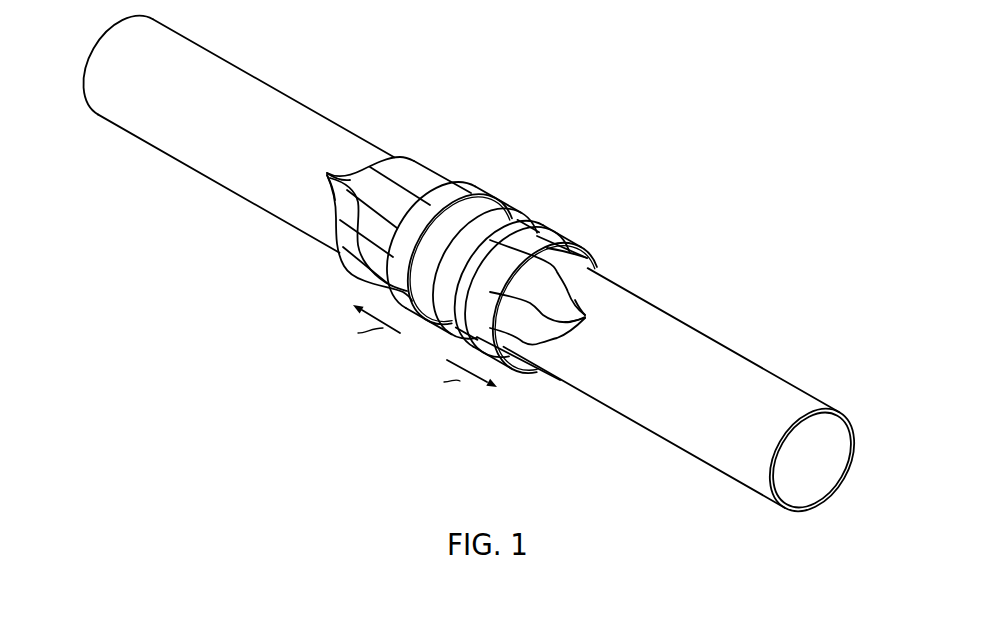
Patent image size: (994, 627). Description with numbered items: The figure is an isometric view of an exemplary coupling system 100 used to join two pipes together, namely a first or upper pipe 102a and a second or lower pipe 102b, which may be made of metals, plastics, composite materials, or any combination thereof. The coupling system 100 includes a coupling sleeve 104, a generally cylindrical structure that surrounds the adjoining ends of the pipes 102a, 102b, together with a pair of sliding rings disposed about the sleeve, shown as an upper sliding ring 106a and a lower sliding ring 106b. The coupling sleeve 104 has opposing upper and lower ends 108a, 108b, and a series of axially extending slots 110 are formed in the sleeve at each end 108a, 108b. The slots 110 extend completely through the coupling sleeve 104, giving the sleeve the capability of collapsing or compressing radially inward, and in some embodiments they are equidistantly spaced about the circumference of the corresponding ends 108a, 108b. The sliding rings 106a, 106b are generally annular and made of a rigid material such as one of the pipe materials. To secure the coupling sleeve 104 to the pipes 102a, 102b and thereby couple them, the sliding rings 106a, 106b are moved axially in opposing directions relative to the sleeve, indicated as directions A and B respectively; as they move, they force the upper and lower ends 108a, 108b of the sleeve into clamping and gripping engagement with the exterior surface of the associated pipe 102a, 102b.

The coupling system 100 is at (613, 113).
The first or upper pipe 102a is at (274, 92).
The second or lower pipe 102b is at (723, 348).
The coupling sleeve 104 is at (487, 209).
The upper sliding ring 106a is at (497, 207).
The lower sliding ring 106b is at (516, 224).
The upper end 108a is at (445, 160).
The lower end 108b is at (574, 230).
The axially extending slots 110 is at (327, 173).